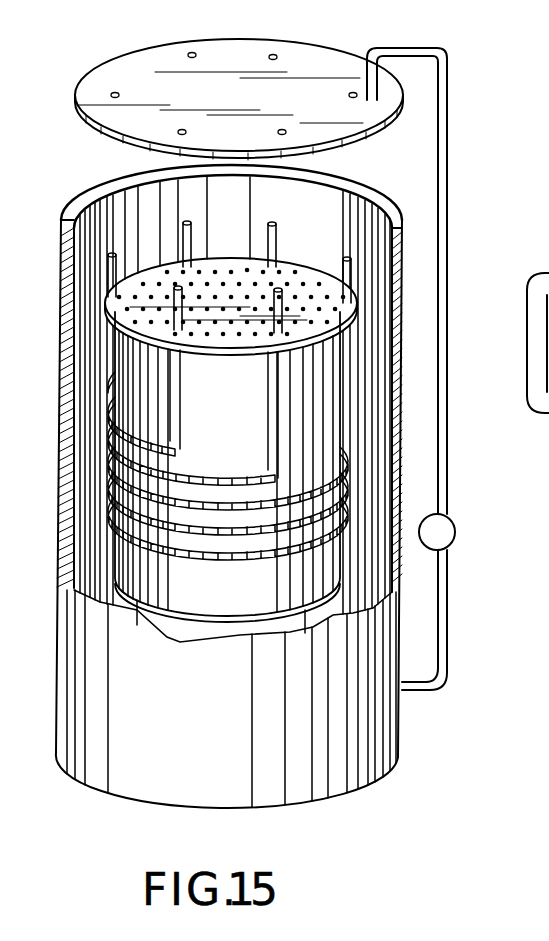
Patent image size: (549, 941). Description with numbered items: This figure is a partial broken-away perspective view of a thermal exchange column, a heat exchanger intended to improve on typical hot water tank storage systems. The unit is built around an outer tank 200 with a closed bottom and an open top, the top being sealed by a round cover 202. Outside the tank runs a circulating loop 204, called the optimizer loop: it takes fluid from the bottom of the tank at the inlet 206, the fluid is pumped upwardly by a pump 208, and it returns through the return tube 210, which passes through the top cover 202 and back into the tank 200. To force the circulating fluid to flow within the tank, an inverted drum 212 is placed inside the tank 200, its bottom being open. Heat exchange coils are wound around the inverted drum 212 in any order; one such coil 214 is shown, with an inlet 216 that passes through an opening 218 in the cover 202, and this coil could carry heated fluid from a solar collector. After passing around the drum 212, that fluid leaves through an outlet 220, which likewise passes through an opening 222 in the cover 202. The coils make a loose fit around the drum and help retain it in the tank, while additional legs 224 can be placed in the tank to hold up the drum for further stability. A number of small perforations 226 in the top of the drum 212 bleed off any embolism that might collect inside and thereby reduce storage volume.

The outer tank 200 is at (378, 761).
The round cover 202 is at (337, 37).
The circulating loop 204 is at (449, 266).
The inlet of the circulating loop 206 is at (406, 697).
The pump 208 is at (449, 545).
The return tube 210 is at (375, 100).
The inverted drum 212 is at (130, 570).
The coil 214 is at (182, 406).
The inlet 216 is at (183, 313).
The opening 218 is at (185, 130).
The outlet 220 is at (343, 260).
The opening 222 is at (349, 96).
The legs 224 is at (137, 606).
The perforations 226 is at (247, 267).